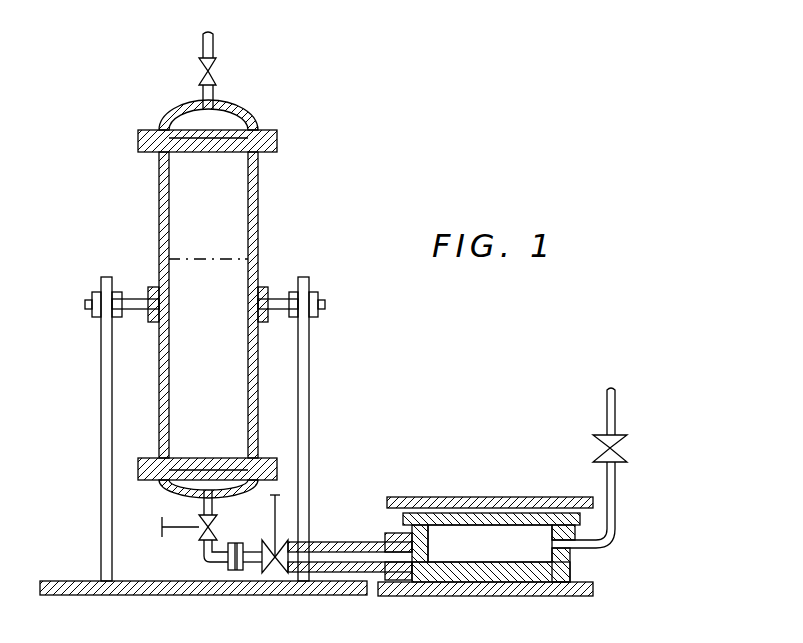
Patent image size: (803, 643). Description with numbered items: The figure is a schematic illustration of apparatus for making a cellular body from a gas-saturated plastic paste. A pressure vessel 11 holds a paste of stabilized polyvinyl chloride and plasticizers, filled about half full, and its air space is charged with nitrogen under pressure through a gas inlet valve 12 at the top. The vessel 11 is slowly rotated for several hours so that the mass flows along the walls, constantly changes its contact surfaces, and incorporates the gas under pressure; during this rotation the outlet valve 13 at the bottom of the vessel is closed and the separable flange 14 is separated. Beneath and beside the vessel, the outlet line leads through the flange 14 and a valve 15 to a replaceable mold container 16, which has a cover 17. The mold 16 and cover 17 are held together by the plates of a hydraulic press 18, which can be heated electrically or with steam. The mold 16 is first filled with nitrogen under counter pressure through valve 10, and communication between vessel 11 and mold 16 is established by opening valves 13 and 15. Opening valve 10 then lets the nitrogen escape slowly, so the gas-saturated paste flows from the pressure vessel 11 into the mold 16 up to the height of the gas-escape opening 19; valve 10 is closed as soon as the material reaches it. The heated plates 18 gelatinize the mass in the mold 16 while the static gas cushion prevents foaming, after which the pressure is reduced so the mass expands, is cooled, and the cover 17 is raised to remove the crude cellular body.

The valve 10 is at (619, 458).
The pressure vessel 11 is at (260, 210).
The gas inlet valve 12 is at (216, 80).
The outlet valve 13 is at (207, 532).
The separable flange 14 is at (228, 561).
The valve 15 is at (268, 563).
The replaceable mold container 16 is at (466, 552).
The cover 17 is at (478, 513).
The plates of a hydraulic press 18 is at (548, 506).
The gas-escape opening 19 is at (572, 556).